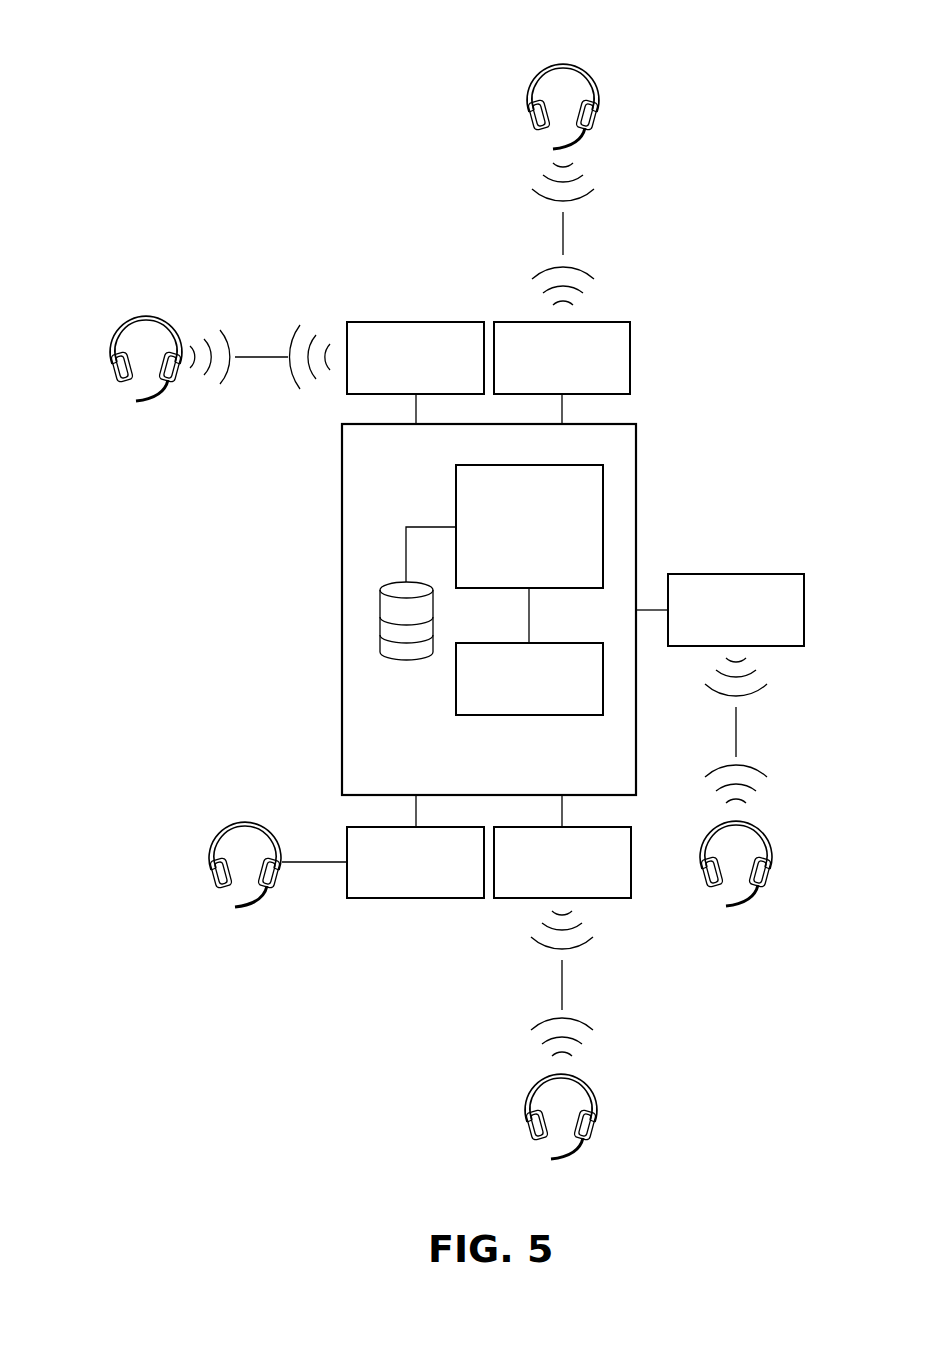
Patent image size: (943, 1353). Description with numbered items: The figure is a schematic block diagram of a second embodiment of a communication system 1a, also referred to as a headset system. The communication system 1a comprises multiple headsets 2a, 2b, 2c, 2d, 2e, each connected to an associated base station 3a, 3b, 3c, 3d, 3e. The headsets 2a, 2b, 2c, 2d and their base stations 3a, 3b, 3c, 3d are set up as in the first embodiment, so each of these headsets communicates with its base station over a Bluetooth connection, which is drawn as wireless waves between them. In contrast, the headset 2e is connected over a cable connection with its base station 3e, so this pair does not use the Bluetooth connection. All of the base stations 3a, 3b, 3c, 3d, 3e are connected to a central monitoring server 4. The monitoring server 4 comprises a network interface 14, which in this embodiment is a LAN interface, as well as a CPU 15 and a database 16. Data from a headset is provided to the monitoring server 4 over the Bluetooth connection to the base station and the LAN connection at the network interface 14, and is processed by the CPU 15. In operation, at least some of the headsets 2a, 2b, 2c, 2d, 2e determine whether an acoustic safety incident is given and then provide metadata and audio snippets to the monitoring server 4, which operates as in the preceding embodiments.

The communication system 1a is at (104, 38).
The headset 2a is at (120, 326).
The headset 2b is at (591, 82).
The headset 2c is at (765, 840).
The headset 2d is at (590, 1093).
The headset 2e is at (216, 834).
The base station 3a is at (415, 321).
The base station 3b is at (592, 321).
The base station 3c is at (750, 574).
The base station 3d is at (606, 899).
The base station 3e is at (415, 899).
The monitoring server 4 is at (370, 424).
The network interface 14 is at (504, 643).
The CPU 15 is at (503, 465).
The database 16 is at (380, 618).